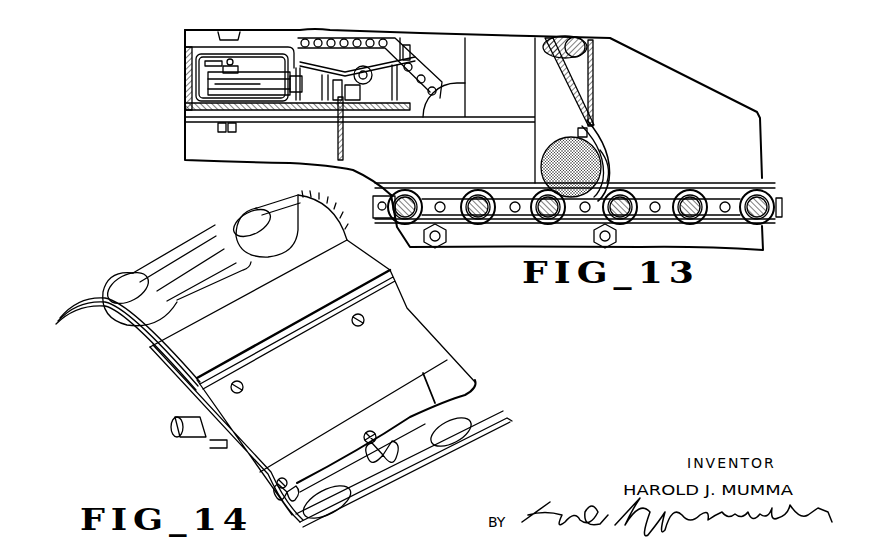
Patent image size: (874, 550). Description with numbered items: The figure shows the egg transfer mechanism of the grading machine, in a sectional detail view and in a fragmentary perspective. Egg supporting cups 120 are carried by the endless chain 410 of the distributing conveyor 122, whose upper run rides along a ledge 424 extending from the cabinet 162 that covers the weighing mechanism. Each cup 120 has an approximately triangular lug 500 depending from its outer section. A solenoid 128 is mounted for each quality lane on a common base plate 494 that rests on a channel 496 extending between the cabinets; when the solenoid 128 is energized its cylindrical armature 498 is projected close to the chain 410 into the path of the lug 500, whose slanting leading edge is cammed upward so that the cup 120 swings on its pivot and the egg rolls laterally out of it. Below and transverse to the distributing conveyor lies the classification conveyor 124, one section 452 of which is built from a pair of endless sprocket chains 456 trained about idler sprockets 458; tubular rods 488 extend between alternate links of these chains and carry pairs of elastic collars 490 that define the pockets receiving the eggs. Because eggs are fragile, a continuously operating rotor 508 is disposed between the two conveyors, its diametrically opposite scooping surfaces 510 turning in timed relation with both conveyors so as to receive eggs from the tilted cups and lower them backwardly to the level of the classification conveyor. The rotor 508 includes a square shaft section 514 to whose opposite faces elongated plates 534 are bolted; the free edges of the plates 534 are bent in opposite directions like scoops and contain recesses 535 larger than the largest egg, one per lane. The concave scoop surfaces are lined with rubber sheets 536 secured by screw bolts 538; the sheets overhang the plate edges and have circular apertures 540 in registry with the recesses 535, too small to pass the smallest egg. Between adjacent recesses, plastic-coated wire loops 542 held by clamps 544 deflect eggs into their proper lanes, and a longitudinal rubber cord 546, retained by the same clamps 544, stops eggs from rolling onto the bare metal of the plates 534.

In FIG. 13, the cups 120 is at (312, 66).
In FIG. 13, the distributing conveyor 122 is at (338, 84).
In FIG. 13, the classification conveyor 124 is at (779, 206).
In FIG. 13, the solenoid 128 is at (210, 94).
In FIG. 13, the cabinet 162 is at (198, 143).
In FIG. 13, the endless chain 410 is at (347, 88).
In FIG. 13, the ledge 424 is at (335, 112).
In FIG. 13, the section of classification conveyor 452 is at (373, 207).
In FIG. 13, the endless sprocket chains 456 is at (735, 223).
In FIG. 14, the idler sprockets 458 is at (338, 215).
In FIG. 13, the tubular rods 488 is at (477, 191).
In FIG. 13, the collars 490 is at (756, 194).
In FIG. 13, the base plate 494 is at (186, 50).
In FIG. 13, the channel 496 is at (192, 106).
In FIG. 13, the cylindrical armature 498 is at (306, 80).
In FIG. 13, the lug 500 is at (300, 72).
In FIG. 13, the rotor 508 is at (607, 108).
In FIG. 14, the rotor 508 is at (413, 332).
In FIG. 13, the scooping surfaces 510 is at (612, 178).
In FIG. 14, the scooping surfaces 510 is at (498, 450).
In FIG. 13, the shaft section 514 is at (562, 38).
In FIG. 14, the shaft section 514 is at (192, 405).
In FIG. 14, the elongated plates 534 is at (172, 374).
In FIG. 13, the recesses 535 is at (612, 148).
In FIG. 14, the recesses 535 is at (258, 266).
In FIG. 13, the rubber sheets 536 is at (600, 120).
In FIG. 14, the rubber sheets 536 is at (280, 228).
In FIG. 14, the screw bolts 538 is at (364, 435).
In FIG. 13, the apertures 540 is at (616, 174).
In FIG. 14, the apertures 540 is at (132, 280).
In FIG. 14, the wire loops 542 is at (387, 447).
In FIG. 14, the clamps 544 is at (381, 440).
In FIG. 13, the rubber cord 546 is at (583, 128).
In FIG. 14, the rubber cord 546 is at (436, 395).